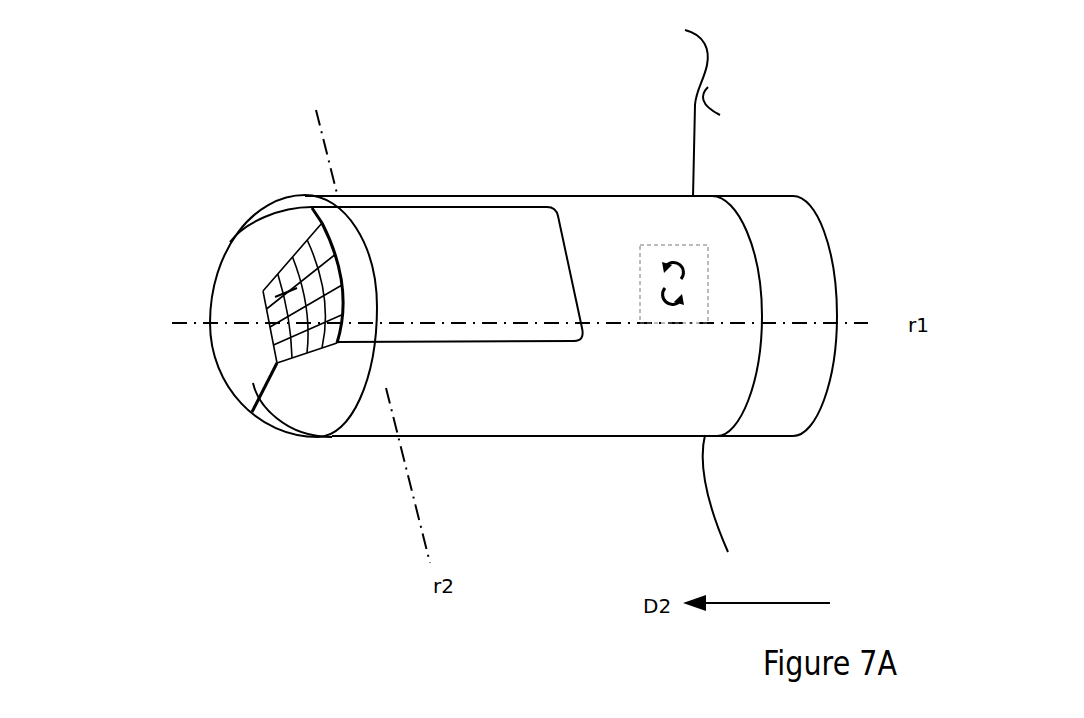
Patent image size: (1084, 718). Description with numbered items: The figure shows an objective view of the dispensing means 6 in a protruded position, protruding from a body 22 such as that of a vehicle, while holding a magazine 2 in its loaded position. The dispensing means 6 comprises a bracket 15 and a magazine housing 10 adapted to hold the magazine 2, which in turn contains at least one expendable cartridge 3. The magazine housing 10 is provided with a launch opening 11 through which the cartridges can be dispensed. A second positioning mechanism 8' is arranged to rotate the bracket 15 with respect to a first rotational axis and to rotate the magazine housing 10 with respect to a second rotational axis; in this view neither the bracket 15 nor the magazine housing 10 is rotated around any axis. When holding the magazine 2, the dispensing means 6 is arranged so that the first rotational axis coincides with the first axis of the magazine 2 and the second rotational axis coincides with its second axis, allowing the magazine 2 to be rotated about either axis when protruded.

The dispensing means 6 is at (187, 236).
The launch opening 11 is at (260, 279).
The expendable cartridge 3 is at (270, 307).
The magazine 2 is at (253, 383).
The magazine housing 10 is at (495, 305).
The bracket 15 is at (665, 415).
The body 22 is at (695, 278).
The second positioning mechanism 8' is at (609, 219).